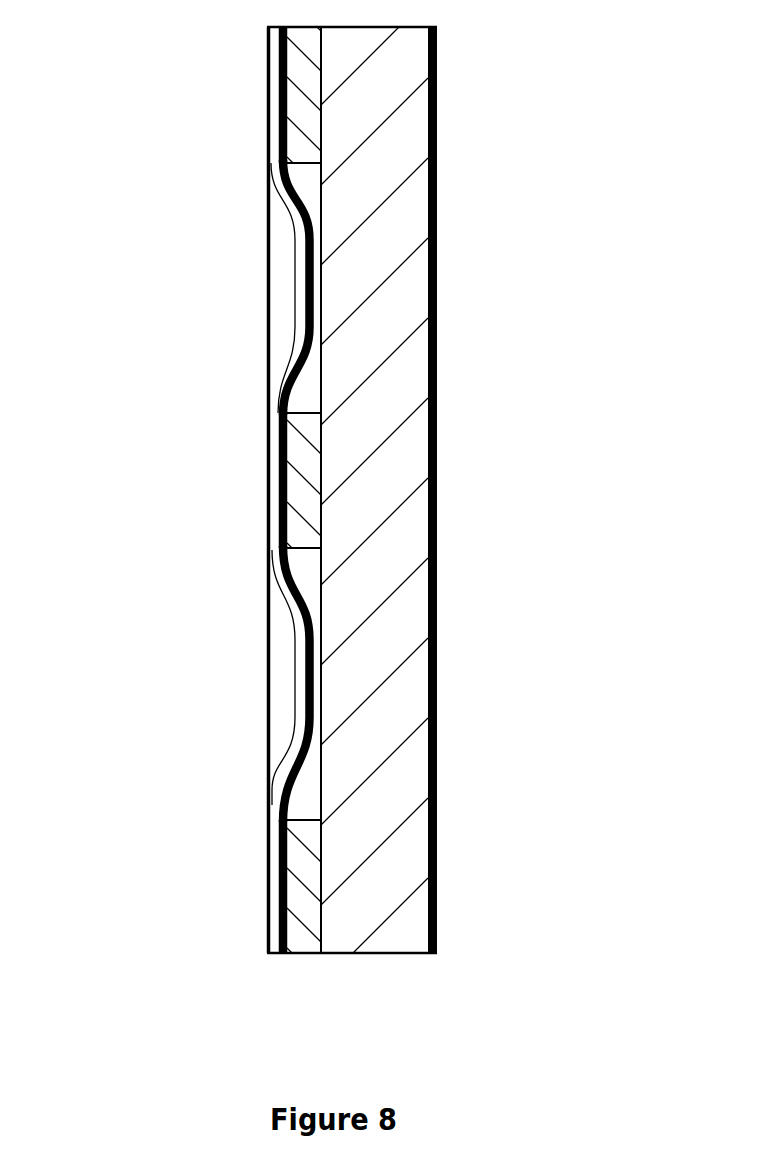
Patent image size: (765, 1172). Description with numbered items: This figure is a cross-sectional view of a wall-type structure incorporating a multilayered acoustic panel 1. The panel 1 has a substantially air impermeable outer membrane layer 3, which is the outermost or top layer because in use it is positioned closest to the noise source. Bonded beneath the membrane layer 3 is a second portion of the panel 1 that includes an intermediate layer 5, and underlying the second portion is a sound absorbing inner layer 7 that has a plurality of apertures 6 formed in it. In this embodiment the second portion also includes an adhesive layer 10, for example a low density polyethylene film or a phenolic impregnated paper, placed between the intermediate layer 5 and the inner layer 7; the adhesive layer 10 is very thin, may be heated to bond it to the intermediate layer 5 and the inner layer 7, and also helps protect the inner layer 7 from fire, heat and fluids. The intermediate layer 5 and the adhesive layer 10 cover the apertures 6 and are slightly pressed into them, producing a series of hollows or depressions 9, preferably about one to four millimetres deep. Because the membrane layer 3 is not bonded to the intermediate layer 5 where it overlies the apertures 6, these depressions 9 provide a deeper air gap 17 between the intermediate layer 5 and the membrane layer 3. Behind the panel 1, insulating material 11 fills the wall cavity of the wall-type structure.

The multilayered acoustic panel 1 is at (160, 160).
The outer membrane layer 3 is at (269, 701).
The intermediate layer 5 is at (276, 428).
The apertures 6 is at (307, 185).
The inner layer 7 is at (290, 72).
The depressions 9 is at (293, 633).
The adhesive layer 10 is at (310, 289).
The insulating material 11 is at (372, 825).
The air gap 17 is at (280, 724).